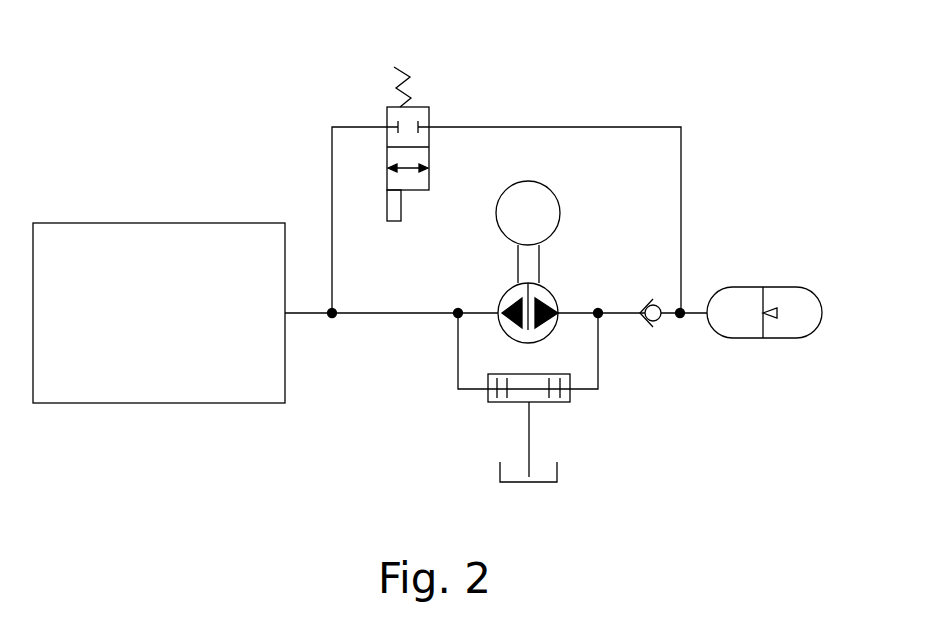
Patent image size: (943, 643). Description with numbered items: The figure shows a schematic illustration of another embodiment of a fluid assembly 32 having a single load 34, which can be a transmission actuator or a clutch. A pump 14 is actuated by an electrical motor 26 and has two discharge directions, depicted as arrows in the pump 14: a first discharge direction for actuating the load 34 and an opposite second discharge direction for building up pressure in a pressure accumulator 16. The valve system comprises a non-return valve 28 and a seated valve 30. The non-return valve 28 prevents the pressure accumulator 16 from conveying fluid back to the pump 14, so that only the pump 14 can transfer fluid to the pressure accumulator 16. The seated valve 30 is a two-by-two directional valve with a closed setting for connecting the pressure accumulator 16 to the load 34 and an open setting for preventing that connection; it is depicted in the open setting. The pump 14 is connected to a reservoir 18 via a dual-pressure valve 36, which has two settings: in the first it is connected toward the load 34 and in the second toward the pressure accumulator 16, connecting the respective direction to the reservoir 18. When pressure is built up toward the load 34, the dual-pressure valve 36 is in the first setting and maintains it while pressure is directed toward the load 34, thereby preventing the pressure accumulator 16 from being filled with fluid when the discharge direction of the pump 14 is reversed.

The pump 14 is at (544, 288).
The pressure accumulator 16 is at (763, 287).
The reservoir 18 is at (500, 482).
The electrical motor 26 is at (548, 187).
The non-return valve 28 is at (657, 320).
The seated valve 30 is at (387, 107).
The fluid assembly 32 is at (684, 92).
The load 34 is at (137, 250).
The dual-pressure valve 36 is at (488, 402).